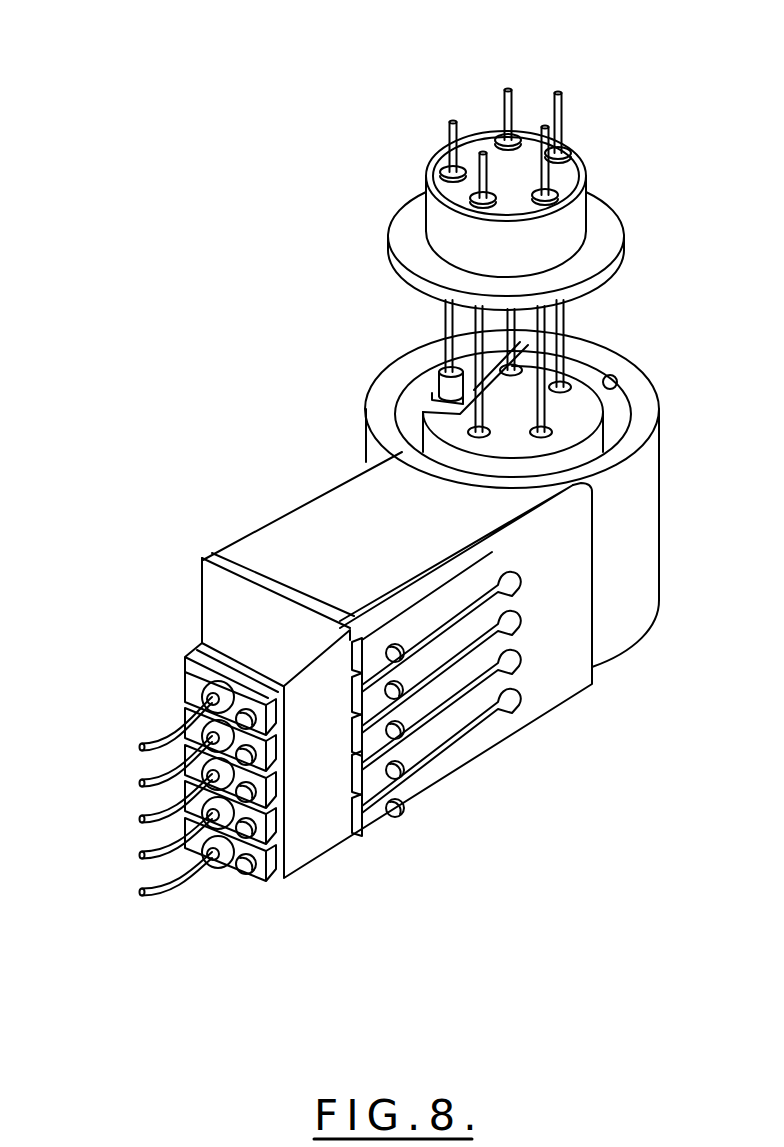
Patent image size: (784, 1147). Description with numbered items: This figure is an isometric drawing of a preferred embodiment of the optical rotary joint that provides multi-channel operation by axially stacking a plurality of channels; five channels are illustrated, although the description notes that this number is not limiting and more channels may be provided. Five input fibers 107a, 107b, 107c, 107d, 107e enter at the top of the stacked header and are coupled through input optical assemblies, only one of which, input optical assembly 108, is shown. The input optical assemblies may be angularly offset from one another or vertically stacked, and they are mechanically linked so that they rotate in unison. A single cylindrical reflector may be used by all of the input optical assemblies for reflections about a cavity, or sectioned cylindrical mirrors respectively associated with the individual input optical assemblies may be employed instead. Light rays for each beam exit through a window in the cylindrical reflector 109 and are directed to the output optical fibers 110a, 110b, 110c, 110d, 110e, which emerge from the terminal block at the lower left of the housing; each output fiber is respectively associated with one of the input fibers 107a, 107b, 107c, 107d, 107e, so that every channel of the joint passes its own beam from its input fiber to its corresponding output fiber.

The input fiber 107a is at (449, 145).
The input fiber 107b is at (512, 93).
The input fiber 107c is at (563, 115).
The input fiber 107d is at (551, 176).
The input fiber 107e is at (479, 194).
The input optical assembly 108 is at (440, 378).
The cylindrical reflector 109 is at (614, 378).
The output optical fiber 110a is at (138, 745).
The output optical fiber 110b is at (138, 781).
The output optical fiber 110c is at (138, 817).
The output optical fiber 110d is at (138, 854).
The output optical fiber 110e is at (140, 891).